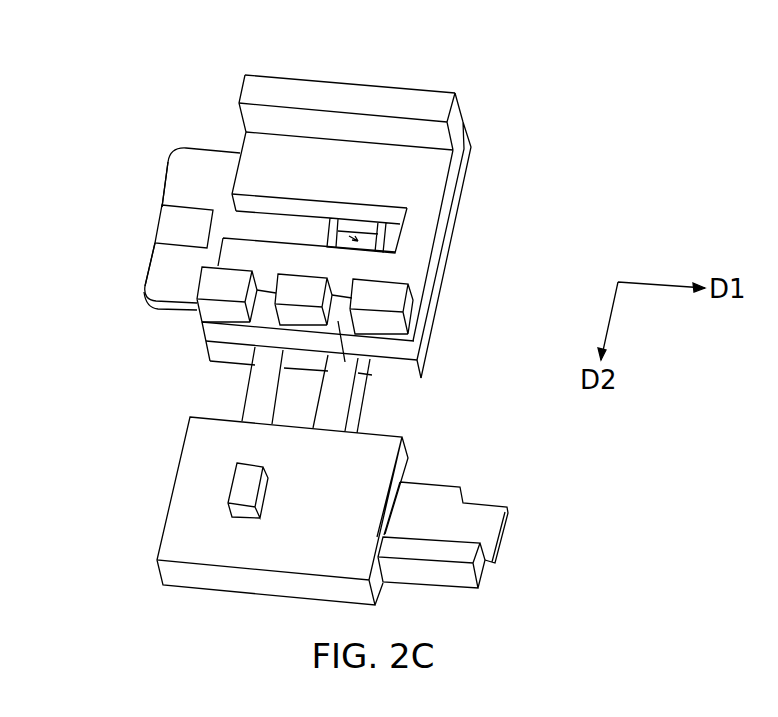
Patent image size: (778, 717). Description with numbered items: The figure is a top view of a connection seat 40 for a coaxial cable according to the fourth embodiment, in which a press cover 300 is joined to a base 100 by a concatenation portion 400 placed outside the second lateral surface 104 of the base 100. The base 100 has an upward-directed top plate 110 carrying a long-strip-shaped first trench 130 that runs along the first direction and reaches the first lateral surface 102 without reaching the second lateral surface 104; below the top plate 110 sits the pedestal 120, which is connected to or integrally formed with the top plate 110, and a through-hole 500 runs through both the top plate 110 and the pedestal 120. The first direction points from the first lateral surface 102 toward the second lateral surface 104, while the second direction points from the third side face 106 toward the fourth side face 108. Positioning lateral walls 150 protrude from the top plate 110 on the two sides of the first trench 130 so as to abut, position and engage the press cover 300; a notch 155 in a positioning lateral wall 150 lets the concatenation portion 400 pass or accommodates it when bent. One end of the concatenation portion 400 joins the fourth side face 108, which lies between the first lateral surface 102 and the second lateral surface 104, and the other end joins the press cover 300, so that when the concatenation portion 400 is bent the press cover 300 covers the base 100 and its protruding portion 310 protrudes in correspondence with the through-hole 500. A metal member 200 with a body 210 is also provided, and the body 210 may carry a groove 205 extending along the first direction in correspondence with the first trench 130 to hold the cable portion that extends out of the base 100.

The connection seat 40 is at (142, 27).
The base 100 is at (336, 218).
The first lateral surface 102 is at (202, 332).
The second lateral surface 104 is at (440, 263).
The third side face 106 is at (283, 78).
The fourth side face 108 is at (222, 349).
The top plate 110 is at (345, 163).
The pedestal 120 is at (405, 367).
The first trench 130 is at (283, 228).
The positioning lateral wall 150 is at (407, 103).
The notch 155 is at (367, 377).
The metal member 200 is at (151, 266).
The groove 205 is at (175, 229).
The body 210 is at (162, 275).
The press cover 300 is at (291, 511).
The protruding portion 310 is at (247, 483).
The concatenation portion 400 is at (369, 410).
The through-hole 500 is at (363, 222).